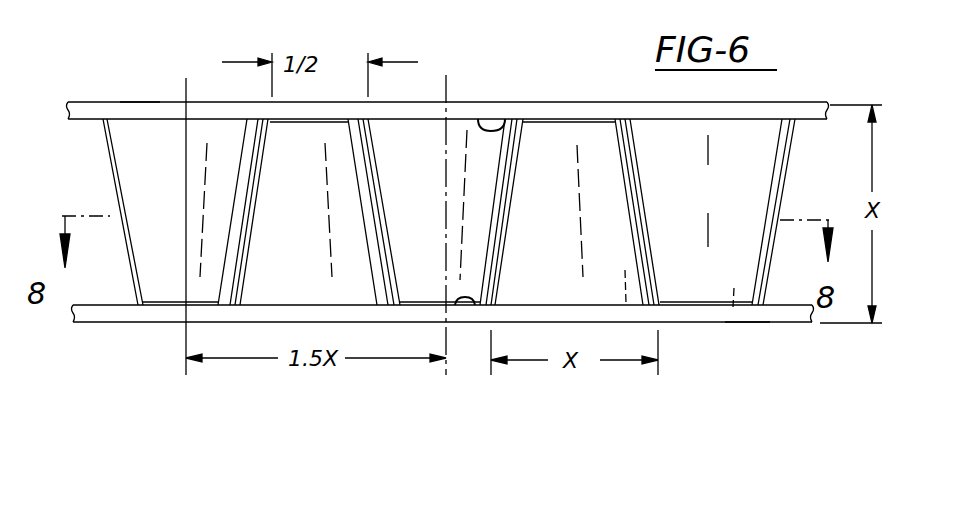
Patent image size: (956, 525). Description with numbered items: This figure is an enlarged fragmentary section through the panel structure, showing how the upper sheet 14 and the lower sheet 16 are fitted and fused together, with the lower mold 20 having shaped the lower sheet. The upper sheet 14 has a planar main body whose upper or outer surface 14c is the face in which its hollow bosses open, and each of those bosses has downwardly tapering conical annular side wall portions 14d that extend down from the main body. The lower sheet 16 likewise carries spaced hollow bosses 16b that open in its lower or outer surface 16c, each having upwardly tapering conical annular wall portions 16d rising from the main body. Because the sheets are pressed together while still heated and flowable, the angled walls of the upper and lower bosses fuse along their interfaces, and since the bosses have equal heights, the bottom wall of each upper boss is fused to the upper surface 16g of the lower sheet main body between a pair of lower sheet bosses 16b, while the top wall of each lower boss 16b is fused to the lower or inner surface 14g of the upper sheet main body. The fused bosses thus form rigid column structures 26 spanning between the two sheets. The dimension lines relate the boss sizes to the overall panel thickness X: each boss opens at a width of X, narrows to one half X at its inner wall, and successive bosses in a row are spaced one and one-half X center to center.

The lower mold 20 is at (102, 9).
The upper sheet 14 is at (424, 96).
The upper or outer surface of the main body portion 14c is at (137, 102).
The downwardly tapering conical annular side wall portions 14d is at (330, 224).
The lower or inner surface of upper sheet main body portion 14g is at (507, 119).
The lower sheet 16 is at (140, 332).
The hollow bosses 16b is at (428, 166).
The lower or outer surface of the main body portion 16c is at (743, 325).
The upwardly tapering conical annular wall portions 16d is at (168, 193).
The upper surface of lower sheet main body portion 16g is at (474, 307).
The rigid column structures 26 is at (108, 193).